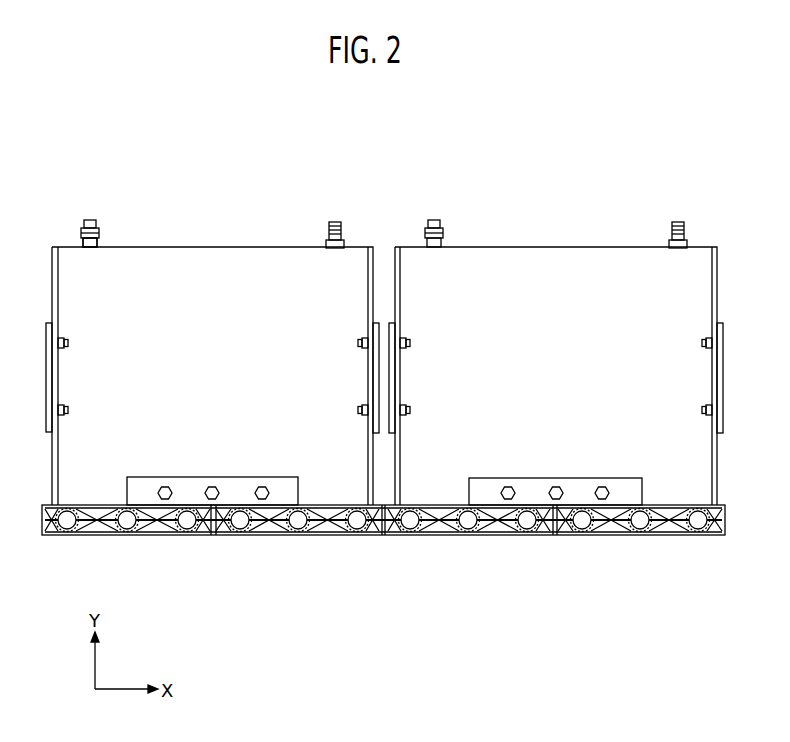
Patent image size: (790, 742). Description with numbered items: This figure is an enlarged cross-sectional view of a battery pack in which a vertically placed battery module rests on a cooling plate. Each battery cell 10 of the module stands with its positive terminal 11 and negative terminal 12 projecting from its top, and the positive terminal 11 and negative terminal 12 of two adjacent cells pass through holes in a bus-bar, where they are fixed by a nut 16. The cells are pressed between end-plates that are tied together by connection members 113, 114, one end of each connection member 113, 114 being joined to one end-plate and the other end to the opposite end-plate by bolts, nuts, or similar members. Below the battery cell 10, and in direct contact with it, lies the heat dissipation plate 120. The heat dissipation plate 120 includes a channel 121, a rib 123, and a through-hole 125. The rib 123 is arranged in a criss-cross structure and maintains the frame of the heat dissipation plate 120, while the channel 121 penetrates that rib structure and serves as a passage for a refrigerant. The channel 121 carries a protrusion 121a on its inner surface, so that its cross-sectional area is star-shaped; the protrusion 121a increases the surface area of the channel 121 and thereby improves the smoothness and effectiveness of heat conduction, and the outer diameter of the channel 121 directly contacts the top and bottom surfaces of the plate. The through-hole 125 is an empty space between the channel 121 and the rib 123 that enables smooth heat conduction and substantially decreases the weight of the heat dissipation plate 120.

The battery cell 10 is at (172, 247).
The positive terminal 11 is at (90, 220).
The negative terminal 12 is at (335, 222).
The nut 16 is at (84, 232).
The connection member 113 is at (43, 410).
The connection member 114 is at (284, 487).
The heat dissipation plate 120 is at (383, 574).
The channel 121 is at (469, 577).
The protrusion 121a is at (465, 537).
The rib 123 is at (372, 537).
The through-hole 125 is at (607, 527).